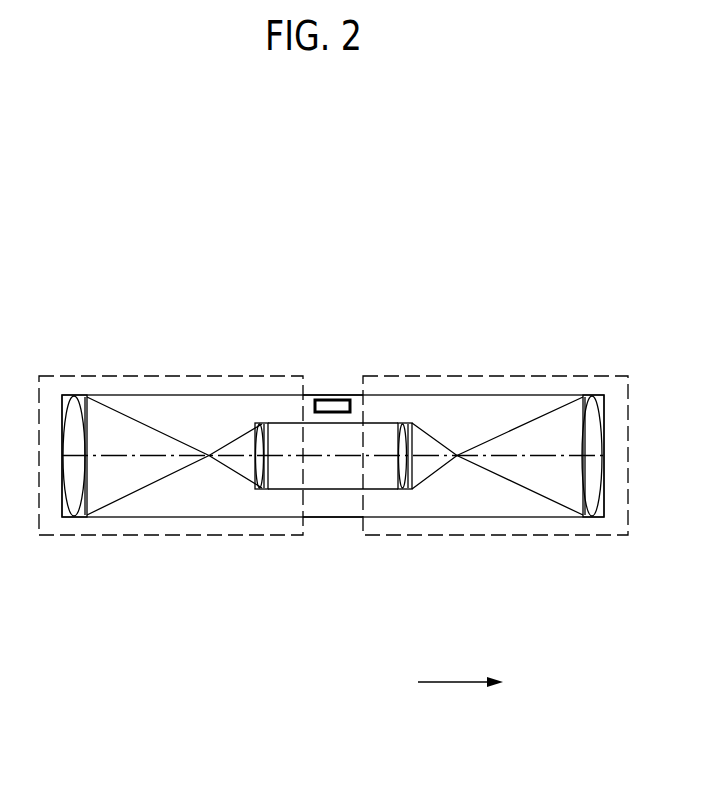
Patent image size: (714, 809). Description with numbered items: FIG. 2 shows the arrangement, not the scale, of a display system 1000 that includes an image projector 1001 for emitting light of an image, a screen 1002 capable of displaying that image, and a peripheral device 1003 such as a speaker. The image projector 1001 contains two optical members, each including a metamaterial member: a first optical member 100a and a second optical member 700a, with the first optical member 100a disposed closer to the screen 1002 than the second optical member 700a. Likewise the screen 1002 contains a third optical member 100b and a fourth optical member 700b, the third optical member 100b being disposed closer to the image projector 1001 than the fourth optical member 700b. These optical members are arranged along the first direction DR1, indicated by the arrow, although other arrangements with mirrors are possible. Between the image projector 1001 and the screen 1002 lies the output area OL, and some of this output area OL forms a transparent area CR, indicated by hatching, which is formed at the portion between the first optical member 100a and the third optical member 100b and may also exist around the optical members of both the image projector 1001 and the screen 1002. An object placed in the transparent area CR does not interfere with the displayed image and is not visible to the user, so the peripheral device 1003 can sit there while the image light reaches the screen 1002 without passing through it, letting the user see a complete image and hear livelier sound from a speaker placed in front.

The display system 1000 is at (151, 266).
The image projector 1001 is at (105, 536).
The screen 1002 is at (572, 536).
The peripheral device 1003 is at (336, 395).
The second optical member 700a is at (67, 384).
The fourth optical member 700b is at (601, 384).
The first optical member 100a is at (265, 491).
The third optical member 100b is at (409, 491).
The output area OL is at (319, 397).
The transparent area CR is at (355, 418).
The first direction DR1 is at (460, 667).